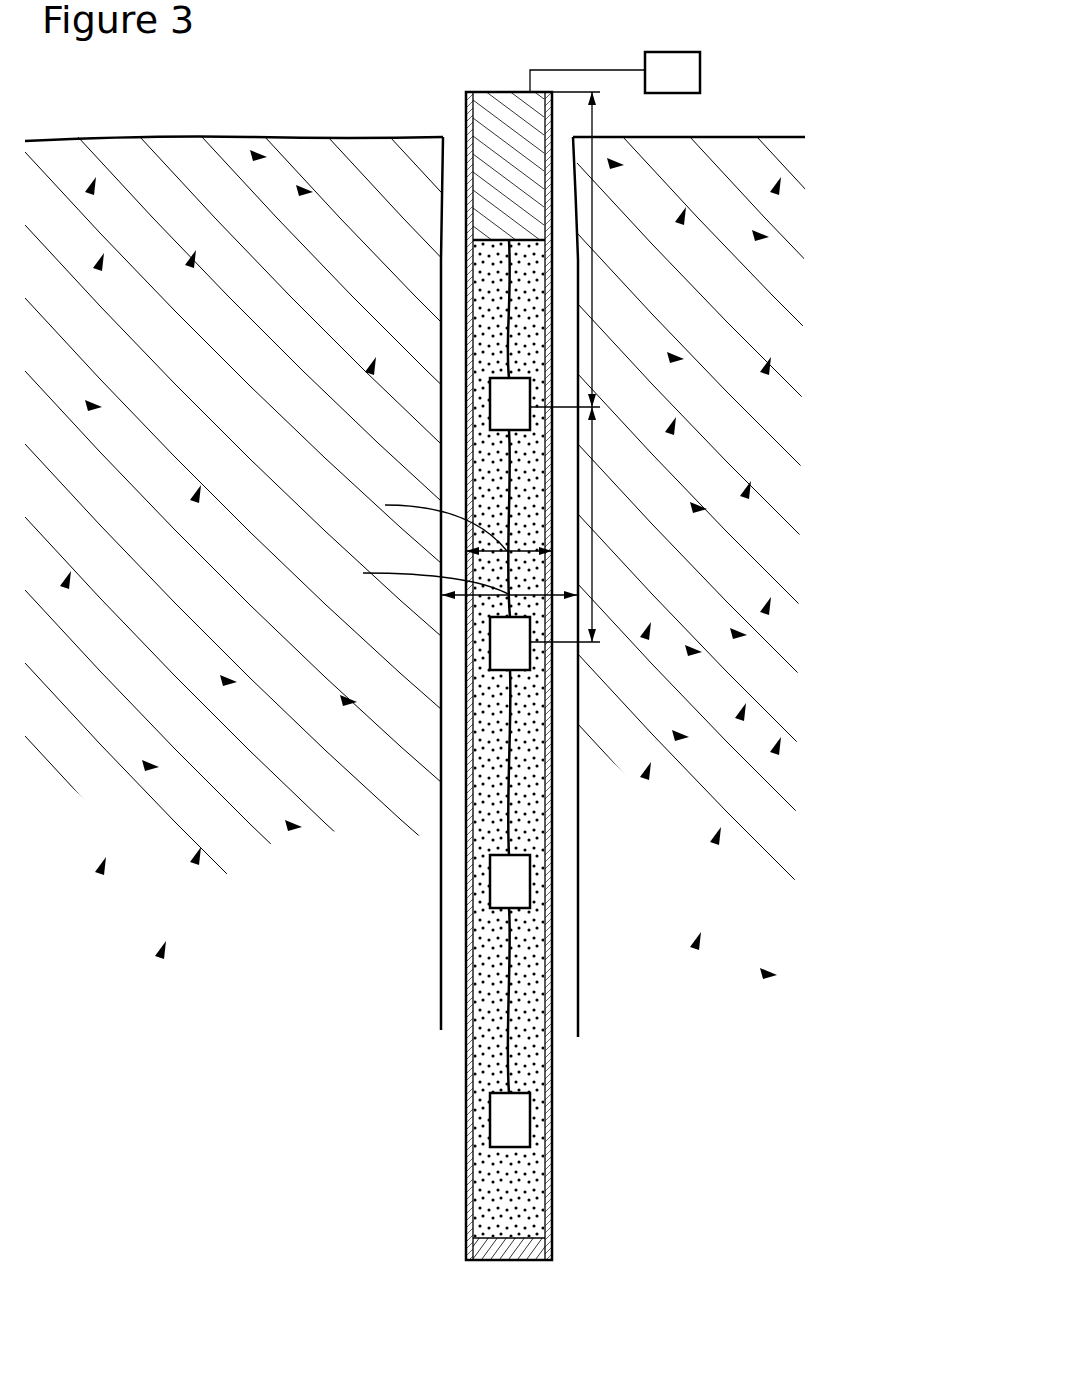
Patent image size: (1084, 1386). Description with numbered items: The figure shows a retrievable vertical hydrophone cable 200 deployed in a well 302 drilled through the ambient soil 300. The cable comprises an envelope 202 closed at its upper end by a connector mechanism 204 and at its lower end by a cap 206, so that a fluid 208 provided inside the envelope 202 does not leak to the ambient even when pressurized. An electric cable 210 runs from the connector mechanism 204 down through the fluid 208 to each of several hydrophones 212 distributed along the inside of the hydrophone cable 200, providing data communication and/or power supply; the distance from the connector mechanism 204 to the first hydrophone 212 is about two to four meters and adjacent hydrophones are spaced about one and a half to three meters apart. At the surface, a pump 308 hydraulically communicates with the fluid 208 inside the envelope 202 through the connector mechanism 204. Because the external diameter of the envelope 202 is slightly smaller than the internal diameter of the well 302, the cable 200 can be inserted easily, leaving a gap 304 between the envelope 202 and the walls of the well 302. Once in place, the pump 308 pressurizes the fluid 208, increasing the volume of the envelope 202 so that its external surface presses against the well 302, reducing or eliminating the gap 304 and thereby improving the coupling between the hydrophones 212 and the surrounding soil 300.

The retrievable vertical hydrophone cable 200 is at (530, 51).
The envelope 202 is at (548, 945).
The connector mechanism 204 is at (498, 137).
The cap 206 is at (535, 1248).
The fluid 208 is at (484, 825).
The electric cable 210 is at (510, 992).
The hydrophone 212 is at (520, 882).
The soil 300 is at (307, 332).
The well 302 is at (462, 281).
The gap 304 is at (452, 408).
The pump 308 is at (659, 52).